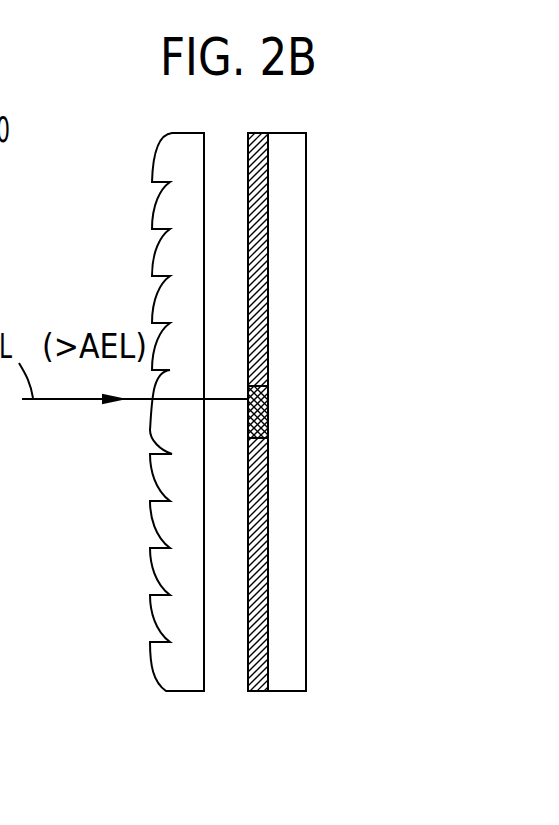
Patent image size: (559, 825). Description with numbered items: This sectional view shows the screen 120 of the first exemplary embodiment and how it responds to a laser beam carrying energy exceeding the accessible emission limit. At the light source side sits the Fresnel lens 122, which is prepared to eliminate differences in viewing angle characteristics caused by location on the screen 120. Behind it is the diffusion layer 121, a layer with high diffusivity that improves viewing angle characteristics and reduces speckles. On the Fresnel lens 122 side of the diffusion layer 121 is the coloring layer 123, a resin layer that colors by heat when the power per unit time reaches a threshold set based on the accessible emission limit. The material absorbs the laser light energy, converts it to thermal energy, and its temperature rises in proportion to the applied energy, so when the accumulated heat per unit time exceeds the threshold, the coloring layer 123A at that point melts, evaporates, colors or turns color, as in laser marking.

The screen 120 is at (343, 185).
The diffusion layer 121 is at (295, 692).
The Fresnel lens 122 is at (180, 692).
The coloring layer 123 is at (258, 692).
The colored part of coloring layer 123A is at (267, 410).